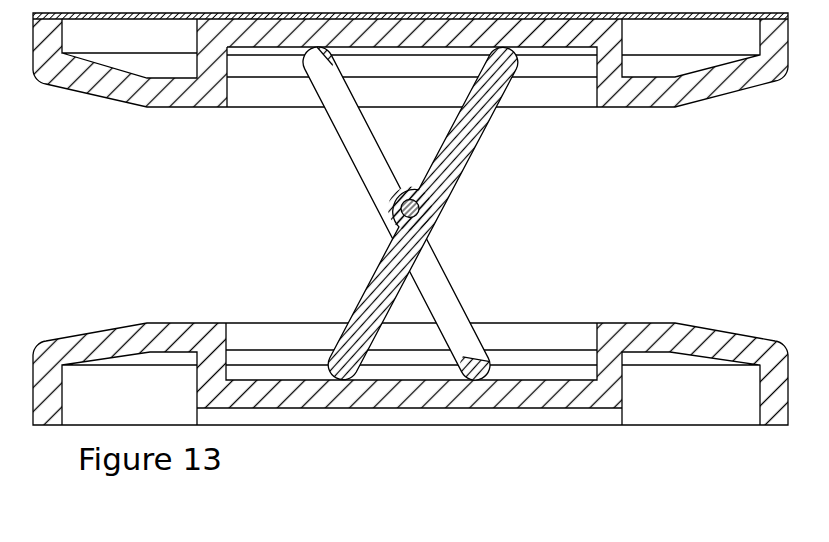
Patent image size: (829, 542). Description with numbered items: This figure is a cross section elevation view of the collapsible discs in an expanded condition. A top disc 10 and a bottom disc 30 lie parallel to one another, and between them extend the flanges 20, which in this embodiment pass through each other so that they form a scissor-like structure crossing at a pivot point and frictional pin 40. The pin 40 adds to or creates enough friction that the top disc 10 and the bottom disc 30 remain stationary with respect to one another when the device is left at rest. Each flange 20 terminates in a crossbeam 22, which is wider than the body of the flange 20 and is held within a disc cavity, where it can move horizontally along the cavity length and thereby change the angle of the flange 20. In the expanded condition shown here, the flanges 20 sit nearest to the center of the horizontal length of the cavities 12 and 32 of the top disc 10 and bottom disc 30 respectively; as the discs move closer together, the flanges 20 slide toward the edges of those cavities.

The top disc 10 is at (207, 43).
The cavity 12 is at (252, 65).
The flange 20 is at (438, 293).
The crossbeam 22 is at (313, 63).
The bottom disc 30 is at (117, 337).
The cavity 32 is at (275, 365).
The pin 40 is at (401, 209).